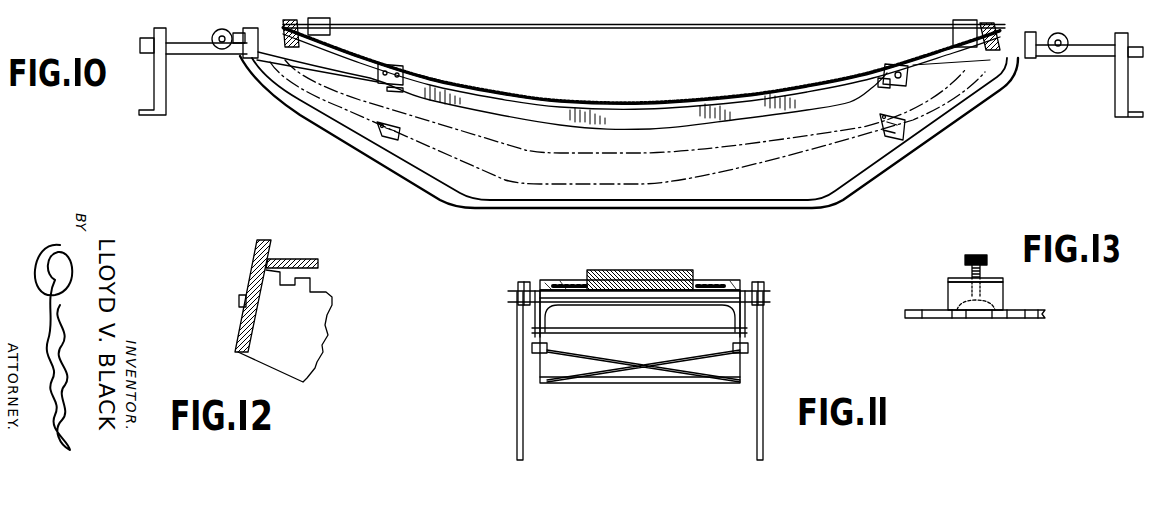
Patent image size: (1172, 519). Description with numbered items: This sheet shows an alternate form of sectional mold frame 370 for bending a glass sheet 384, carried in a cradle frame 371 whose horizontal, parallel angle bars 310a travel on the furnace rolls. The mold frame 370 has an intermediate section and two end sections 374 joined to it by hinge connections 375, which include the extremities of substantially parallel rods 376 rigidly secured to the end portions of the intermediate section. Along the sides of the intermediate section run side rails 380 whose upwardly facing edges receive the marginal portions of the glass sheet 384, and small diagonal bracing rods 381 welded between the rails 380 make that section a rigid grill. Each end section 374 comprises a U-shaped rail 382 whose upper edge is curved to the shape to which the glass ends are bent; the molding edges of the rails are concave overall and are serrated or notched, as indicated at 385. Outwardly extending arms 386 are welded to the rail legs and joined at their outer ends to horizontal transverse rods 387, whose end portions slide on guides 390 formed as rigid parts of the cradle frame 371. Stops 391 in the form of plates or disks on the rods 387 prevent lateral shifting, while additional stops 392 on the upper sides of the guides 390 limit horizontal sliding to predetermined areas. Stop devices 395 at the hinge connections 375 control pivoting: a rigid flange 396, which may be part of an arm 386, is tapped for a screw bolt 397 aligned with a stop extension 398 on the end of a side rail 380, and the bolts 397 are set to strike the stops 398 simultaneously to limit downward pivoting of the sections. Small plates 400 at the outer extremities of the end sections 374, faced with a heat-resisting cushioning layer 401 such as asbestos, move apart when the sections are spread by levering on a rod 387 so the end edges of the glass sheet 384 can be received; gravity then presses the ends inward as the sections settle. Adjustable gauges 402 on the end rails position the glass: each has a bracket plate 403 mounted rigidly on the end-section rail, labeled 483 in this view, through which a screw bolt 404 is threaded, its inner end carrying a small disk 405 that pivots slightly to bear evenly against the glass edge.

In FIG. 10, the angle bars 310a is at (150, 116).
In FIG. 10, the sectional mold frame 370 is at (564, 93).
In FIG. 11, the sectional mold frame 370 is at (532, 371).
In FIG. 10, the cradle frame 371 is at (667, 214).
In FIG. 11, the cradle frame 371 is at (771, 347).
In FIG. 11, the end sections 374 is at (643, 302).
In FIG. 10, the hinge connections 375 is at (889, 68).
In FIG. 11, the parallel rods 376 is at (573, 330).
In FIG. 10, the side rails 380 is at (683, 118).
In FIG. 11, the diagonal bracing rods 381 is at (663, 364).
In FIG. 12, the U-shaped rails 382 is at (322, 292).
In FIG. 10, the glass sheet 384 is at (630, 29).
In FIG. 11, the glass sheet 384 is at (730, 288).
In FIG. 12, the glass sheet 384 is at (317, 258).
In FIG. 10, the serrations 385 is at (417, 73).
In FIG. 10, the outwardly extending arms 386 is at (1016, 70).
In FIG. 11, the transverse rods 387 is at (600, 288).
In FIG. 10, the guides 390 is at (197, 55).
In FIG. 11, the guides 390 is at (517, 303).
In FIG. 10, the stops 391 is at (1063, 38).
In FIG. 11, the stops 391 is at (526, 283).
In FIG. 10, the additional stops 392 is at (247, 27).
In FIG. 11, the additional stops 392 is at (766, 286).
In FIG. 10, the stop devices 395 is at (878, 81).
In FIG. 10, the rigid flange 396 is at (898, 86).
In FIG. 10, the screw bolts 397 is at (888, 72).
In FIG. 10, the stop extensions 398 is at (860, 116).
In FIG. 10, the plates 400 is at (288, 34).
In FIG. 11, the plates 400 is at (683, 278).
In FIG. 12, the plates 400 is at (262, 262).
In FIG. 12, the cushioning layer 401 is at (277, 242).
In FIG. 10, the adjustable gauges 402 is at (953, 22).
In FIG. 13, the adjustable gauges 402 is at (945, 278).
In FIG. 13, the bracket plate 403 is at (957, 292).
In FIG. 13, the screw bolt 404 is at (967, 254).
In FIG. 13, the disk 405 is at (967, 308).
In FIG. 13, the base plate 483 is at (1024, 308).